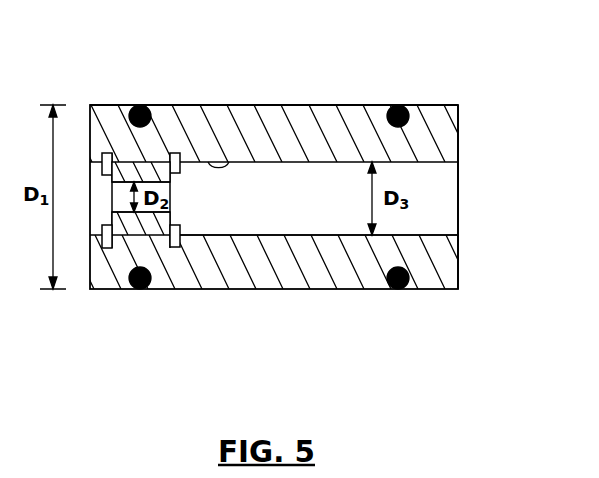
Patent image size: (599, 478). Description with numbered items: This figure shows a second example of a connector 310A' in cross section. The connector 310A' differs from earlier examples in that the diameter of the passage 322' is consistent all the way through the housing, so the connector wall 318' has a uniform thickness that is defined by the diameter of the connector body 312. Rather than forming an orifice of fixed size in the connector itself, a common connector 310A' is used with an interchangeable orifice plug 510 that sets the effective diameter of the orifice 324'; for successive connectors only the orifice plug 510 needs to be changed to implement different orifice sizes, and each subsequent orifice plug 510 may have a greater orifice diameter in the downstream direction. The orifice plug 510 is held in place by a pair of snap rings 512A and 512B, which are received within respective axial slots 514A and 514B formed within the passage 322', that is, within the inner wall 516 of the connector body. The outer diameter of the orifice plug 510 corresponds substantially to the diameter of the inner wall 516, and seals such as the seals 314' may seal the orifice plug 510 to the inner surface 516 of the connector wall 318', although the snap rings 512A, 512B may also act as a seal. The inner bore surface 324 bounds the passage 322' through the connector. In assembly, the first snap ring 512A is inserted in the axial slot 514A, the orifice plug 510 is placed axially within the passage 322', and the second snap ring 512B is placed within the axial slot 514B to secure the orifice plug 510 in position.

The connector 310A' is at (268, 166).
The connector body 312 is at (343, 105).
The seals 314' is at (278, 170).
The connector wall 318' is at (475, 182).
The passage 322' is at (313, 198).
The inner surface of bore 324 is at (319, 274).
The orifice 324' is at (136, 267).
The orifice plug 510 is at (153, 208).
The first snap ring 512A is at (157, 224).
The second snap ring 512B is at (102, 228).
The axial slot 514A is at (182, 233).
The axial slot 514B is at (105, 248).
The inner wall 516 is at (229, 160).